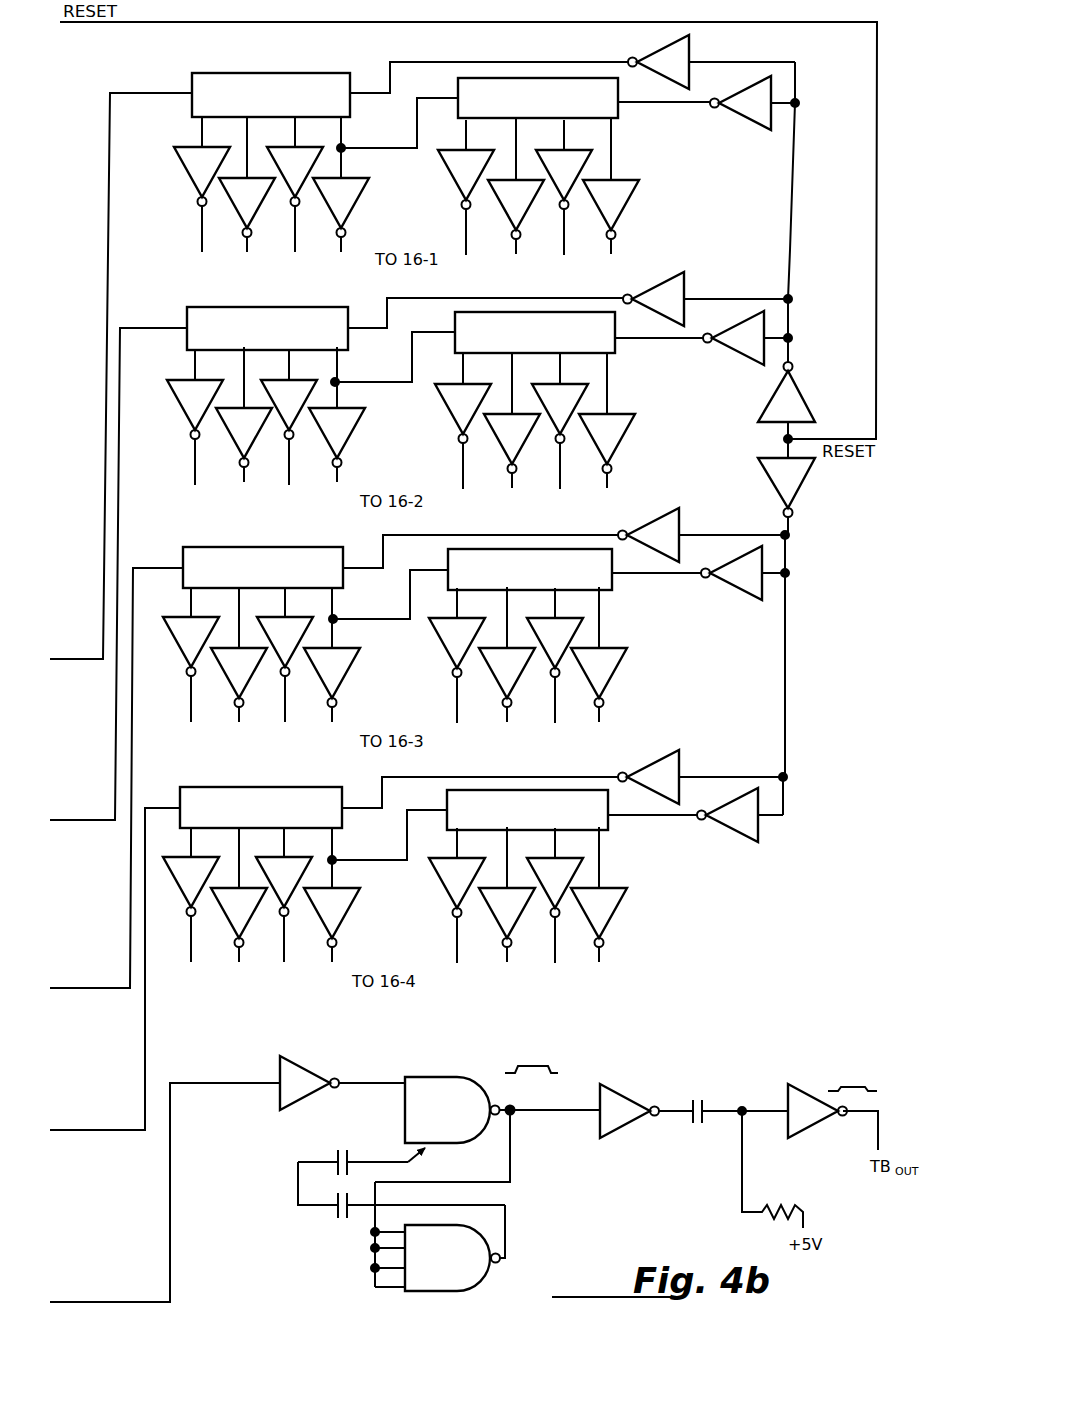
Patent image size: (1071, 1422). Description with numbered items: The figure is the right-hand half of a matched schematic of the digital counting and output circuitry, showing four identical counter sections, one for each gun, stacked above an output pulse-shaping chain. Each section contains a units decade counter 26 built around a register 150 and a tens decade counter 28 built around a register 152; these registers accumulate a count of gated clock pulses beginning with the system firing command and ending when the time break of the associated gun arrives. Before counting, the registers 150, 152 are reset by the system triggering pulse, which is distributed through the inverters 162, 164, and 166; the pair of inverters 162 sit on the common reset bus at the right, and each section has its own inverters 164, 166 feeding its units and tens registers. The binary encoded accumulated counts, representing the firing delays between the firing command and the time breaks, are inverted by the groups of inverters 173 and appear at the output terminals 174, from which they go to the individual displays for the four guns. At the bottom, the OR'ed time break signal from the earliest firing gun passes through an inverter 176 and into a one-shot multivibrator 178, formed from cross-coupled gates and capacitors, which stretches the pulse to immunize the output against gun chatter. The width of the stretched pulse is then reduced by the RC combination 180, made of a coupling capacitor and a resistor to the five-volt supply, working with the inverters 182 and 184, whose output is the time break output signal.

The register 150 is at (229, 73).
The register 152 is at (505, 78).
The units decade counter 26 is at (383, 65).
The tens decade counter 28 is at (682, 144).
The inverter 164 is at (658, 56).
The inverter 166 is at (752, 106).
The inverter 162 is at (797, 403).
The inverter 173 is at (451, 200).
The output terminal 174 is at (620, 249).
The inverter 176 is at (302, 1082).
The one-shot multivibrator 178 is at (450, 1069).
The RC combination 180 is at (736, 1170).
The inverter 182 is at (622, 1108).
The inverter 184 is at (803, 1102).